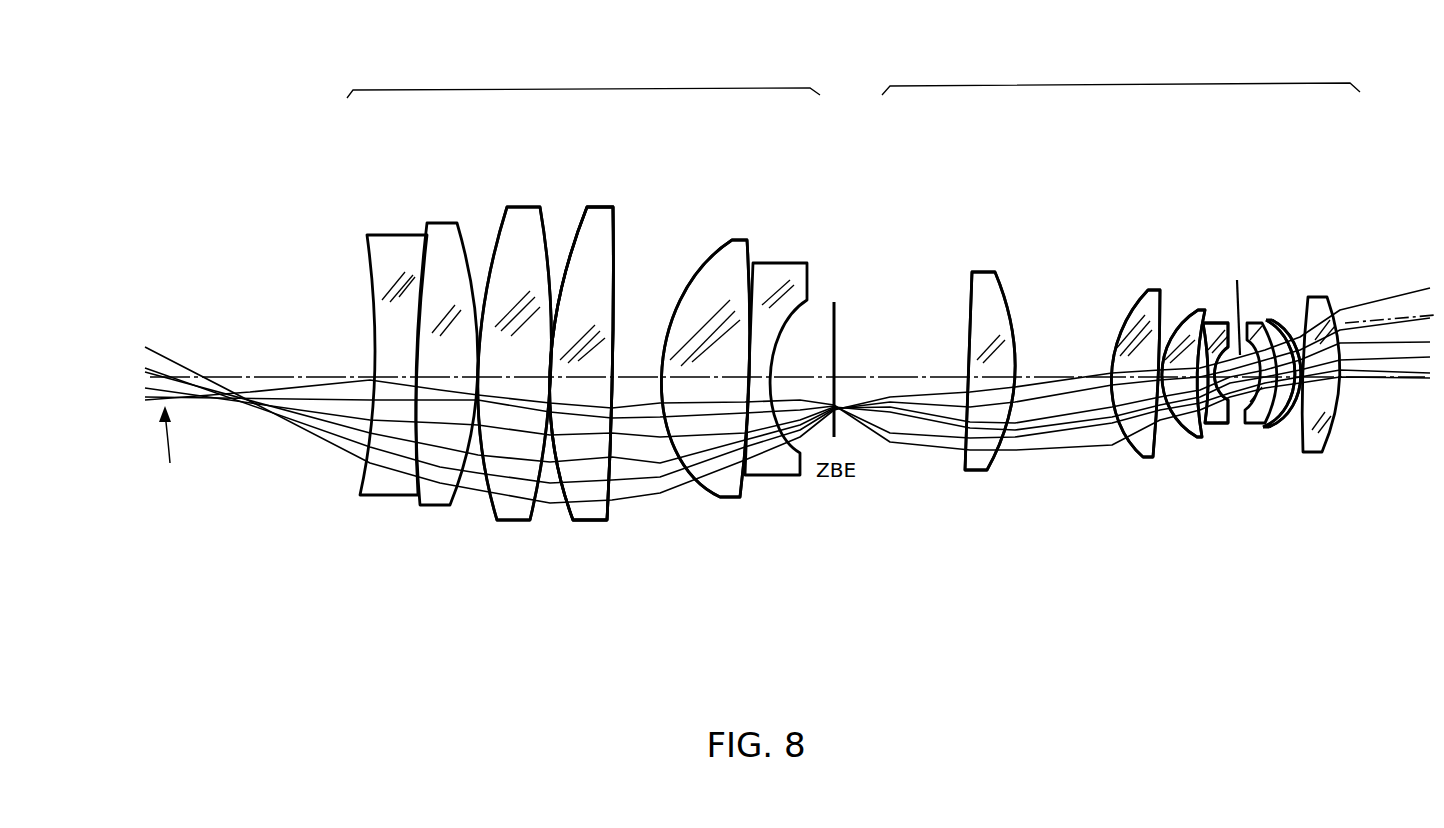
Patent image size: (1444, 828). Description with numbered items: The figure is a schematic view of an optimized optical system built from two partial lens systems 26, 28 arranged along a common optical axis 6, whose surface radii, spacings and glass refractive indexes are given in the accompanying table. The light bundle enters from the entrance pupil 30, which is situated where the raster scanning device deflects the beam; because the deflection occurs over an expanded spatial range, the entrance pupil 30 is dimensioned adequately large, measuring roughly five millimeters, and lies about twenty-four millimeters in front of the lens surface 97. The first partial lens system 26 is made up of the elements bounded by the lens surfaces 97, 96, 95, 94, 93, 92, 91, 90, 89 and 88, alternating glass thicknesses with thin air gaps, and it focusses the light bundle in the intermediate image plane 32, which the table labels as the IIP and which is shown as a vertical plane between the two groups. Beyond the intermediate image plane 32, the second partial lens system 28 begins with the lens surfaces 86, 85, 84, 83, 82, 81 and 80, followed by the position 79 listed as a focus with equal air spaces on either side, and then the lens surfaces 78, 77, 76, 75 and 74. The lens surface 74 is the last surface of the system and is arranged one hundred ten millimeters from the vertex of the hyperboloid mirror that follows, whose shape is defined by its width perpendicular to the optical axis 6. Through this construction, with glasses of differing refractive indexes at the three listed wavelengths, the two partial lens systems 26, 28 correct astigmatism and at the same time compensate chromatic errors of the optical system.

The optical axis 6 is at (322, 377).
The first partial lens system 26 is at (539, 315).
The second partial lens system 28 is at (1139, 297).
The entrance pupil 30 is at (169, 452).
The intermediate image plane 32 is at (834, 292).
The lens surface 74 is at (1330, 440).
The lens surface 75 is at (1300, 437).
The lens surface 76 is at (1282, 320).
The lens surface 77 is at (1267, 427).
The lens surface 78 is at (1236, 304).
The focus 79 is at (1218, 322).
The lens surface 80 is at (1220, 423).
The lens surface 81 is at (1197, 313).
The lens surface 82 is at (1179, 428).
The lens surface 83 is at (1145, 452).
The lens surface 84 is at (1135, 447).
The lens surface 85 is at (1010, 317).
The lens surface 86 is at (972, 327).
The lens surface 88 is at (800, 325).
The lens surface 89 is at (735, 240).
The lens surface 90 is at (666, 300).
The lens surface 91 is at (613, 262).
The lens surface 92 is at (562, 510).
The lens surface 93 is at (547, 240).
The lens surface 94 is at (490, 512).
The lens surface 95 is at (478, 330).
The lens surface 96 is at (428, 227).
The lens surface 97 is at (370, 290).